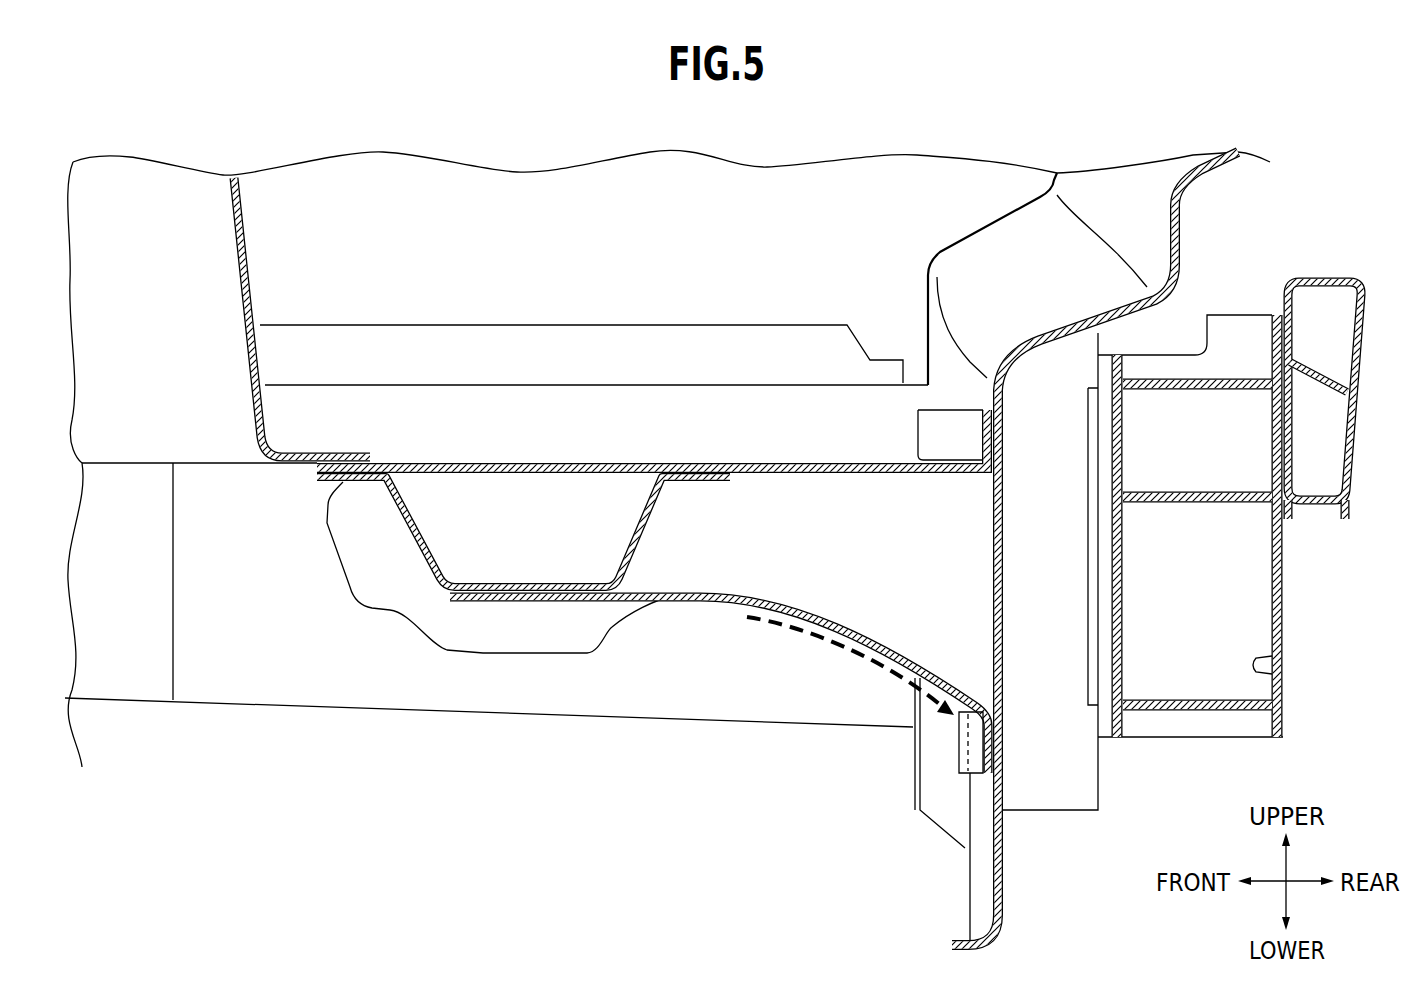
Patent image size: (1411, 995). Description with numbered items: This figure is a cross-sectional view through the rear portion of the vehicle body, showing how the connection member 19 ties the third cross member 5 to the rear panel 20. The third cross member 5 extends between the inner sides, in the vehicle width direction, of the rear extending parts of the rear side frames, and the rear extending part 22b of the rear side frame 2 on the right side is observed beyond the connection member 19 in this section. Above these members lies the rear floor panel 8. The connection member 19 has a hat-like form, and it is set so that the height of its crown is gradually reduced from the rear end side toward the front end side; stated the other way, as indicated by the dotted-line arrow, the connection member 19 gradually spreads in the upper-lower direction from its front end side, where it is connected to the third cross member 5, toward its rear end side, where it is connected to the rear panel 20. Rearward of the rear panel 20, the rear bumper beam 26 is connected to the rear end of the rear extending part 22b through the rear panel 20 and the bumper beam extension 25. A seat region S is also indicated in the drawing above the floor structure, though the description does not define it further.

The rear side frame 2 is at (489, 630).
The rear extending part 22b is at (427, 698).
The third cross member 5 is at (413, 550).
The rear floor panel 8 is at (556, 458).
The connection member 19 is at (692, 597).
The rear panel 20 is at (1003, 653).
The bumper beam extension 25 is at (1098, 783).
The rear bumper beam 26 is at (1280, 683).
The seat S is at (1263, 211).